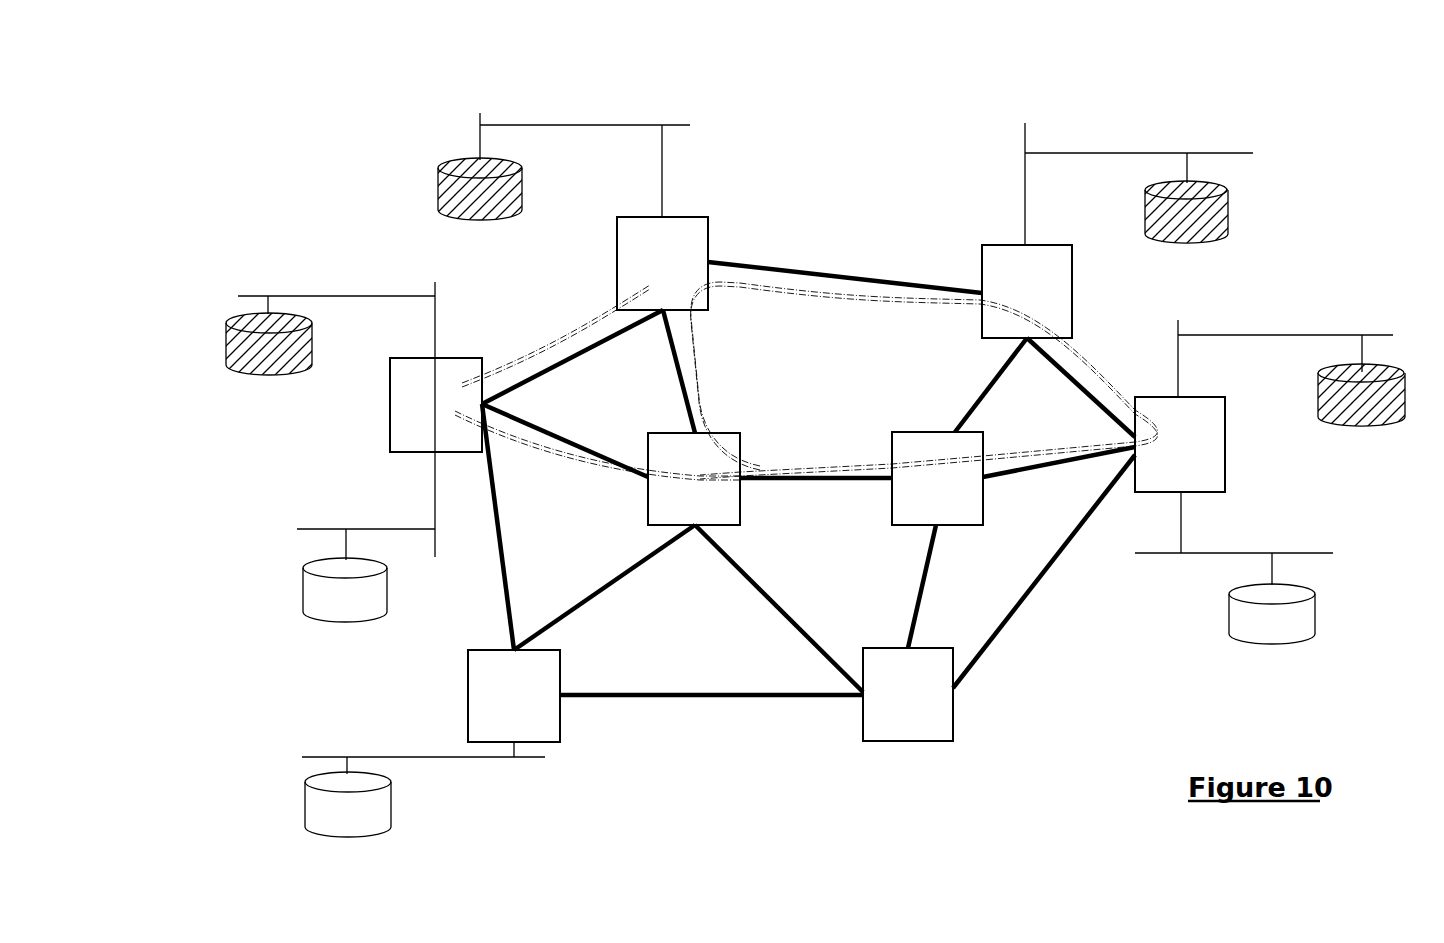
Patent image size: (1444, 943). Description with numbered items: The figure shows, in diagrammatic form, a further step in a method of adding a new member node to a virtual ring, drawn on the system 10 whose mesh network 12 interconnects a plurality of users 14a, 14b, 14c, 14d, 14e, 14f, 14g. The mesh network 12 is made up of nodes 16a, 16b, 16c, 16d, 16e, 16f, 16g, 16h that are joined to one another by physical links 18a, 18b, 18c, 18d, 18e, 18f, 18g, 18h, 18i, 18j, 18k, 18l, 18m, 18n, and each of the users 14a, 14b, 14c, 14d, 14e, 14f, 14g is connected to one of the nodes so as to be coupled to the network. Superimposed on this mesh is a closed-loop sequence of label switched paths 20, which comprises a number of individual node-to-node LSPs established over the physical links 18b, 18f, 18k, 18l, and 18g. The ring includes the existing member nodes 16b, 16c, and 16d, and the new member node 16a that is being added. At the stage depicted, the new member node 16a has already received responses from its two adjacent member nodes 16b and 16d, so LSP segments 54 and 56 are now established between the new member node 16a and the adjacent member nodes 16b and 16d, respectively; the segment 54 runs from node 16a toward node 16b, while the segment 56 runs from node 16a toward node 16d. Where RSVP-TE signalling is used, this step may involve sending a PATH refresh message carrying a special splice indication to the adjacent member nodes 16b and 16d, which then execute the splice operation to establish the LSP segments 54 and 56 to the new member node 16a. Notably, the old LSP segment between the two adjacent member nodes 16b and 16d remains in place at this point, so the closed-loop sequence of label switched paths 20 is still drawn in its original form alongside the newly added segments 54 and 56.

The system 10 is at (228, 119).
The mesh network 12 is at (826, 191).
The user 14a is at (226, 350).
The user 14b is at (438, 193).
The user 14c is at (1230, 228).
The user 14d is at (1386, 427).
The user 14e is at (1316, 626).
The user 14f is at (305, 800).
The user 14g is at (303, 592).
The new member node 16a is at (390, 393).
The member node 16b is at (617, 240).
The member node 16c is at (1072, 281).
The member node 16d is at (1225, 475).
The node 16e is at (897, 526).
The node 16f is at (648, 520).
The node 16g is at (468, 732).
The node 16h is at (940, 742).
The physical link 18a is at (575, 353).
The physical link 18b is at (682, 386).
The physical link 18c is at (572, 445).
The physical link 18d is at (504, 502).
The physical link 18e is at (604, 598).
The physical link 18f is at (924, 281).
The physical link 18g is at (785, 482).
The physical link 18h is at (776, 618).
The physical link 18i is at (735, 700).
The physical link 18j is at (966, 395).
The physical link 18k is at (1066, 381).
The physical link 18l is at (1030, 470).
The physical link 18m is at (931, 572).
The physical link 18n is at (1004, 612).
The closed-loop sequence of label switched paths 20 is at (808, 304).
The LSP segment 54 is at (561, 331).
The LSP segment 56 is at (570, 468).